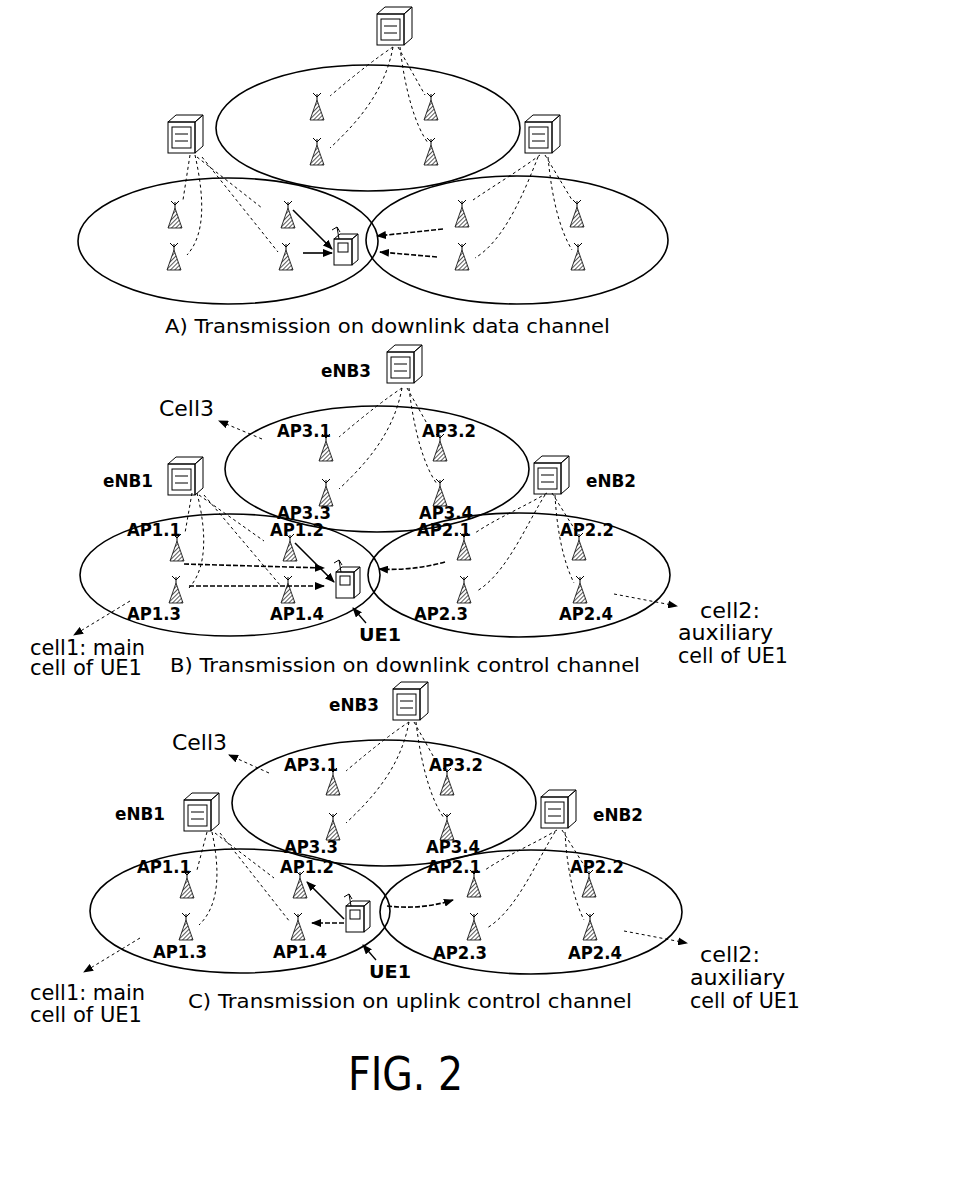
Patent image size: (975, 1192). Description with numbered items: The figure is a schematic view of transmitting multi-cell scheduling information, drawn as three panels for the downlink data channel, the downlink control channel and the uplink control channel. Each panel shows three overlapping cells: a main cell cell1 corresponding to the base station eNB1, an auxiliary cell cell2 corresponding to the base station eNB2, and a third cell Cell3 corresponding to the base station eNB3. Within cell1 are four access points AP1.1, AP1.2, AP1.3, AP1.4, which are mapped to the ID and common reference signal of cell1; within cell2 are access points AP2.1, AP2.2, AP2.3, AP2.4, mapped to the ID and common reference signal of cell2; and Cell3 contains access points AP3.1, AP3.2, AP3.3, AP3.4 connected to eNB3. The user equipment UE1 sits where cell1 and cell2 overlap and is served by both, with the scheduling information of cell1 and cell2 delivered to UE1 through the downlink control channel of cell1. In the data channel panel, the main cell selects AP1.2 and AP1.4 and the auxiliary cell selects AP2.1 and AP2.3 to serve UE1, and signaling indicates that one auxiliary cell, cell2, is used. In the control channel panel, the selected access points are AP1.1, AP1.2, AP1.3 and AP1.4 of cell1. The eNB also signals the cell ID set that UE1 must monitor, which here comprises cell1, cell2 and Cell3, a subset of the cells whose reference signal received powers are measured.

The cell3 Cell3 is at (253, 98).
The main cell cell1 is at (128, 268).
The auxiliary cell cell2 is at (617, 257).
The element eNB1 is at (157, 134).
The element eNB2 is at (576, 134).
The element eNB3 is at (362, 26).
The element UE1 is at (351, 275).
The element AP1.1 is at (153, 207).
The element AP1.2 is at (295, 207).
The element AP1.3 is at (153, 267).
The element AP1.4 is at (295, 267).
The element AP2.1 is at (442, 206).
The element AP2.2 is at (585, 206).
The element AP2.3 is at (440, 267).
The element AP2.4 is at (584, 267).
The element AP3.1 is at (296, 99).
The element AP3.2 is at (440, 99).
The element AP3.3 is at (296, 160).
The element AP3.4 is at (437, 160).